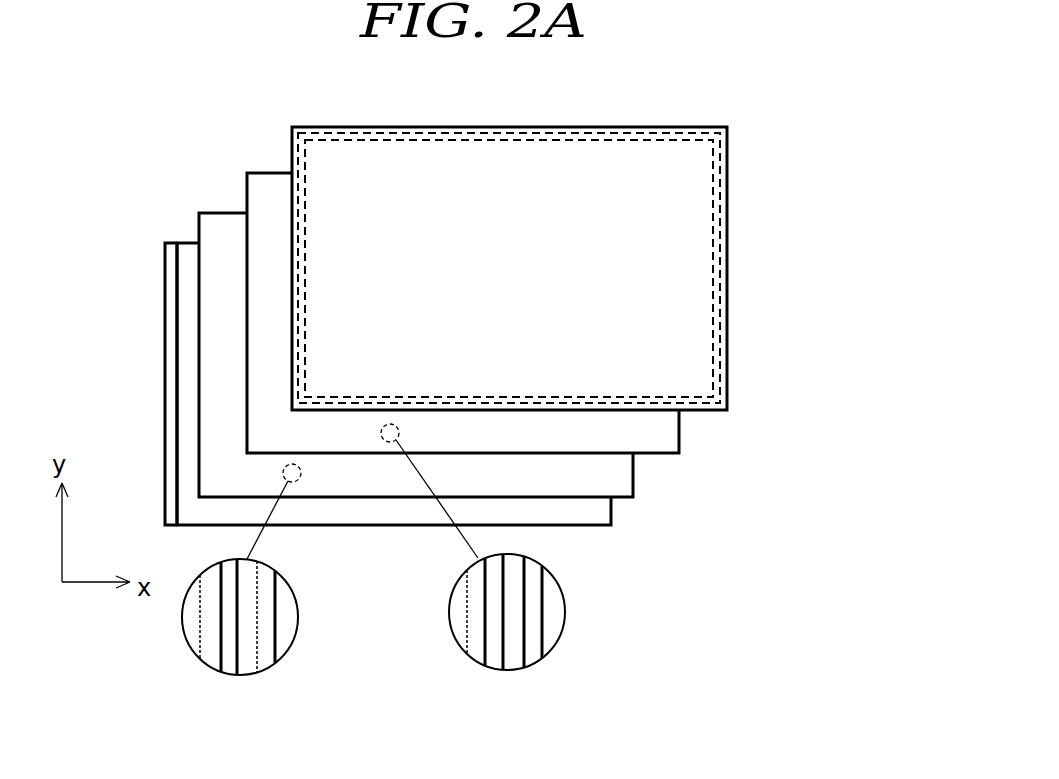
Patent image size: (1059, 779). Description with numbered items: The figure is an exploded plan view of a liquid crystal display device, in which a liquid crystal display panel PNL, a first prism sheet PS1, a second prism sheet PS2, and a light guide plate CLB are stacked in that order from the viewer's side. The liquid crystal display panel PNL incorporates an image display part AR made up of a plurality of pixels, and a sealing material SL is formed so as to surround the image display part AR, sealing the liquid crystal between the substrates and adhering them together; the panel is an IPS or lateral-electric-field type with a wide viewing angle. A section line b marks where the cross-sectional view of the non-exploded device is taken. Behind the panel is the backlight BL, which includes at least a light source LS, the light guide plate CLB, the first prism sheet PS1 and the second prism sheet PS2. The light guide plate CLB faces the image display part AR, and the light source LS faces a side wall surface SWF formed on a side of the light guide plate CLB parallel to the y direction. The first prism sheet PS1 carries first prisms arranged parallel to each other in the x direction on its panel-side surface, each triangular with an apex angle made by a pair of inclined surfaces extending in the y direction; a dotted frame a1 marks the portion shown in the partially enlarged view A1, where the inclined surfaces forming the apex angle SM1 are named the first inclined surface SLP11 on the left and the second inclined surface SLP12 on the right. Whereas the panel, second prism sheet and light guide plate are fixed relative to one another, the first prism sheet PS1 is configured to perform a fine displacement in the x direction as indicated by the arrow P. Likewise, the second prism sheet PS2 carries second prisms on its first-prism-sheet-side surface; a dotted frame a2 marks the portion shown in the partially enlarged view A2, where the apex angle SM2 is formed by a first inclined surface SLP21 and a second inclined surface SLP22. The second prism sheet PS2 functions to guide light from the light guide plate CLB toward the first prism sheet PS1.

The liquid crystal display panel PNL is at (740, 210).
The sealing material SL is at (340, 127).
The image display part AR is at (509, 268).
The backlight BL is at (525, 397).
The first prism sheet PS1 is at (679, 430).
The second prism sheet PS2 is at (633, 479).
The light guide plate CLB is at (611, 515).
The light source LS is at (170, 337).
The side wall surface SWF is at (177, 278).
The line b- b is at (252, 268).
The arrow P is at (302, 438).
The dotted frame a1 is at (414, 432).
The dotted frame a2 is at (313, 475).
The partially enlarged view A1 is at (525, 587).
The partially enlarged view A2 is at (237, 610).
The first inclined surface SLP11 is at (493, 627).
The second inclined surface SLP12 is at (518, 617).
The apex angle SM1 is at (503, 653).
The first inclined surface SLP21 is at (227, 627).
The second inclined surface SLP22 is at (252, 617).
The apex angle SM2 is at (240, 653).